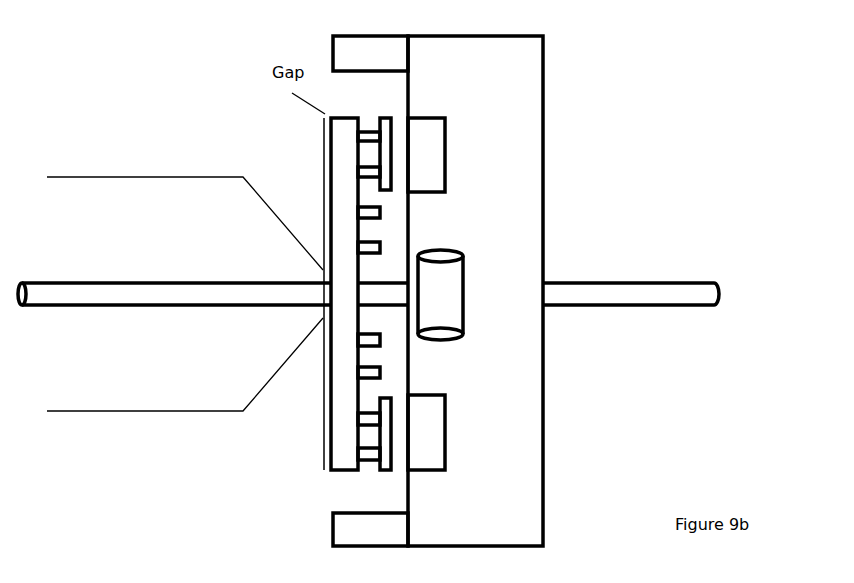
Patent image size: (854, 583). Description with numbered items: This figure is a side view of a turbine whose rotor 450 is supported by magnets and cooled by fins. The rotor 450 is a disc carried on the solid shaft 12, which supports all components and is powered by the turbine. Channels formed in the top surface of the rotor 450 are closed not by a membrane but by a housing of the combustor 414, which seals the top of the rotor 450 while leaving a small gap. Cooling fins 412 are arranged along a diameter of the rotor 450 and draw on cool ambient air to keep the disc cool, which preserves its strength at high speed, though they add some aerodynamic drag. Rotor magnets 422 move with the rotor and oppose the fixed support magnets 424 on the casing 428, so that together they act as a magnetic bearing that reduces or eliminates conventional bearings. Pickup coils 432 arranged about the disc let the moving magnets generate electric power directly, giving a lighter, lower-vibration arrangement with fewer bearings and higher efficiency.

The solid shaft 12 is at (124, 306).
The combustor 414 is at (106, 177).
The rotor 450 is at (345, 162).
The cooling fins 412 is at (383, 376).
The rotor magnets 422 is at (380, 470).
The support magnets 424 is at (380, 54).
The pickup coils 432 is at (463, 253).
The casing 428 is at (490, 458).